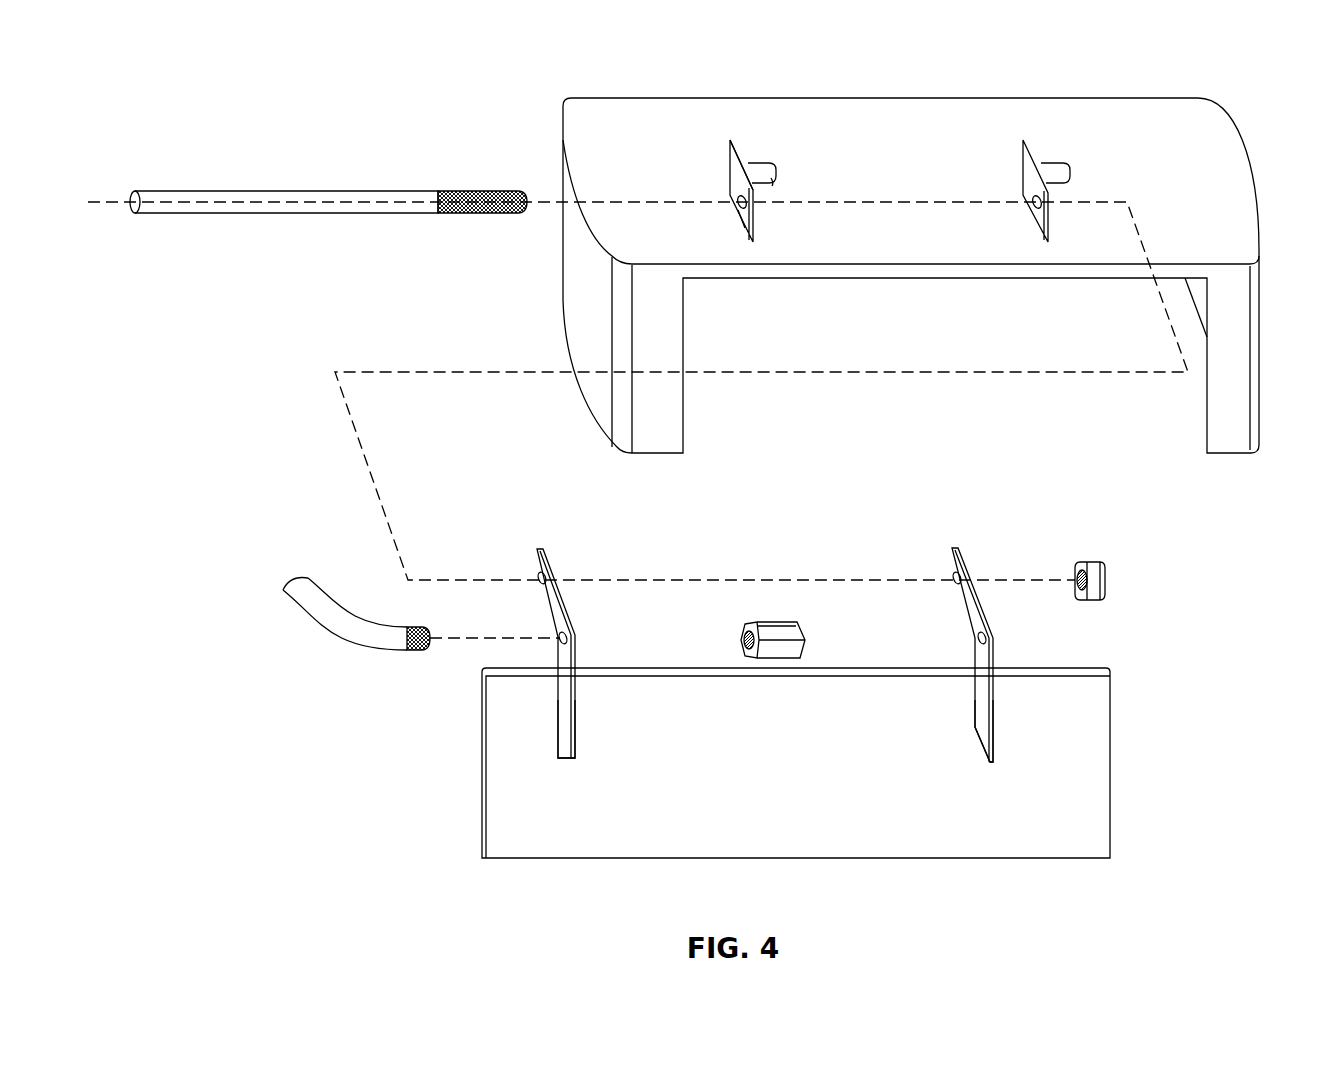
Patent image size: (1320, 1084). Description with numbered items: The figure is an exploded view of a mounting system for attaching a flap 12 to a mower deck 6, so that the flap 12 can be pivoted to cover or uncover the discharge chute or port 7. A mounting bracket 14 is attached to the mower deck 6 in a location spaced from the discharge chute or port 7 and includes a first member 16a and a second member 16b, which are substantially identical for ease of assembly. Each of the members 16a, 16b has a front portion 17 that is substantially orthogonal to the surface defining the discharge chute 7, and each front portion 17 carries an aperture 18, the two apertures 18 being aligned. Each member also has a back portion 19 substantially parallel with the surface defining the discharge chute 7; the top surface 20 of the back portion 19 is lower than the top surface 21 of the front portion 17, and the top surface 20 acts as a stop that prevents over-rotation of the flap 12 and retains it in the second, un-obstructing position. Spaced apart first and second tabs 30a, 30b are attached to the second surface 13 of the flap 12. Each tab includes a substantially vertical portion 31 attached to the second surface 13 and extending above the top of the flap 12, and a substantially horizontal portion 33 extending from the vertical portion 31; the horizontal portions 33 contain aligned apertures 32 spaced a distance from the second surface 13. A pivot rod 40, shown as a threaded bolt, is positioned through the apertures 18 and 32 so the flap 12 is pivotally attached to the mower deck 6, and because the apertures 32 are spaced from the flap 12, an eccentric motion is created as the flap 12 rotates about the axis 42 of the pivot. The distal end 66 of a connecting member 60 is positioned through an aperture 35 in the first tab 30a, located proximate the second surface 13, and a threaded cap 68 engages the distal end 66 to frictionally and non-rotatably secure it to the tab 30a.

The mower deck 6 is at (940, 251).
The discharge chute or port 7 is at (1146, 319).
The flap 12 is at (740, 792).
The second surface of the flap 13 is at (553, 825).
The mounting bracket 14 is at (840, 122).
The first member 16a is at (872, 203).
The second member 16b is at (1034, 152).
The front portion 17 is at (740, 215).
The aperture 18 is at (733, 198).
The back portion 19 is at (773, 183).
The top surface of the back portion 20 is at (770, 162).
The top surface of the front portion 21 is at (733, 143).
The first tab 30a is at (748, 641).
The second tab 30b is at (1010, 658).
The substantially vertical portion 31 is at (562, 725).
The aperture 32 is at (538, 574).
The substantially horizontal portion 33 is at (567, 623).
The aperture 35 is at (558, 642).
The pivot rod 40 is at (341, 238).
The axis 42 is at (552, 205).
The connecting member 60 is at (344, 655).
The distal end 66 is at (408, 665).
The threaded cap 68 is at (742, 634).